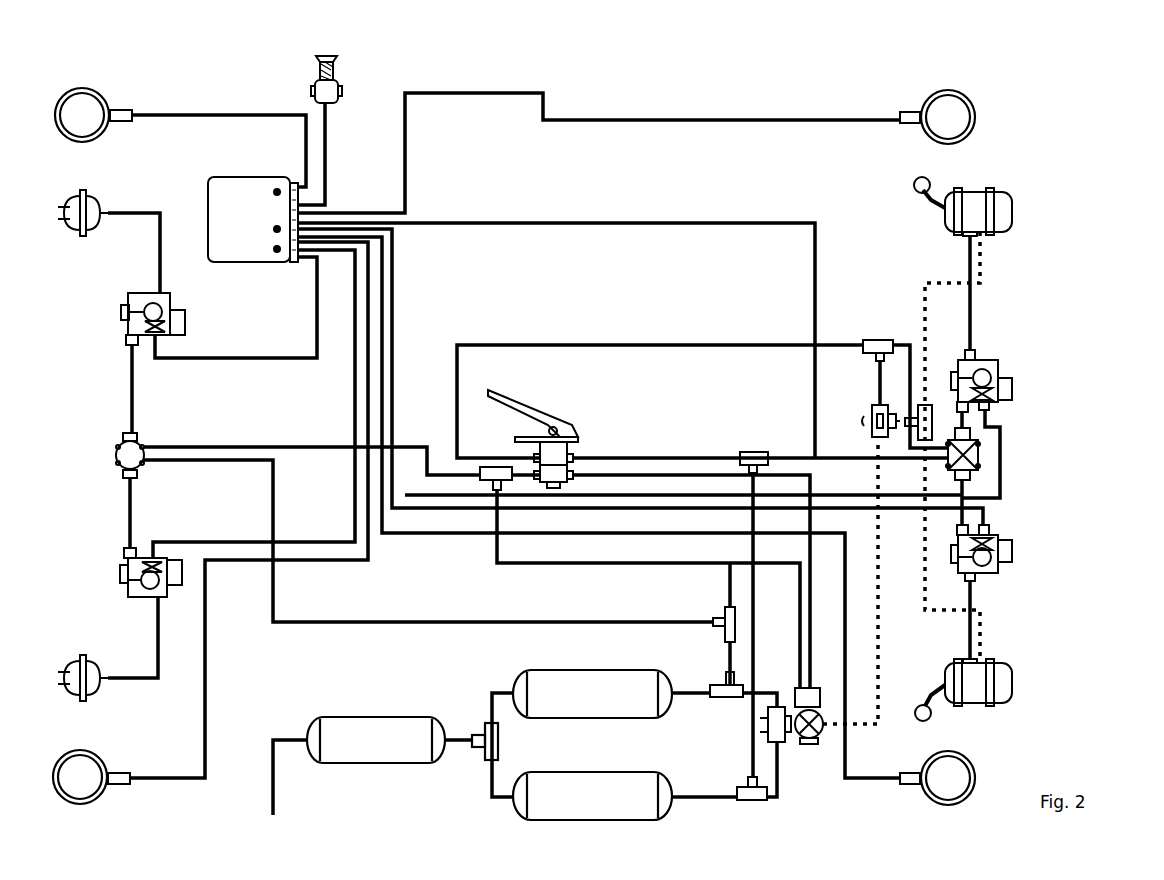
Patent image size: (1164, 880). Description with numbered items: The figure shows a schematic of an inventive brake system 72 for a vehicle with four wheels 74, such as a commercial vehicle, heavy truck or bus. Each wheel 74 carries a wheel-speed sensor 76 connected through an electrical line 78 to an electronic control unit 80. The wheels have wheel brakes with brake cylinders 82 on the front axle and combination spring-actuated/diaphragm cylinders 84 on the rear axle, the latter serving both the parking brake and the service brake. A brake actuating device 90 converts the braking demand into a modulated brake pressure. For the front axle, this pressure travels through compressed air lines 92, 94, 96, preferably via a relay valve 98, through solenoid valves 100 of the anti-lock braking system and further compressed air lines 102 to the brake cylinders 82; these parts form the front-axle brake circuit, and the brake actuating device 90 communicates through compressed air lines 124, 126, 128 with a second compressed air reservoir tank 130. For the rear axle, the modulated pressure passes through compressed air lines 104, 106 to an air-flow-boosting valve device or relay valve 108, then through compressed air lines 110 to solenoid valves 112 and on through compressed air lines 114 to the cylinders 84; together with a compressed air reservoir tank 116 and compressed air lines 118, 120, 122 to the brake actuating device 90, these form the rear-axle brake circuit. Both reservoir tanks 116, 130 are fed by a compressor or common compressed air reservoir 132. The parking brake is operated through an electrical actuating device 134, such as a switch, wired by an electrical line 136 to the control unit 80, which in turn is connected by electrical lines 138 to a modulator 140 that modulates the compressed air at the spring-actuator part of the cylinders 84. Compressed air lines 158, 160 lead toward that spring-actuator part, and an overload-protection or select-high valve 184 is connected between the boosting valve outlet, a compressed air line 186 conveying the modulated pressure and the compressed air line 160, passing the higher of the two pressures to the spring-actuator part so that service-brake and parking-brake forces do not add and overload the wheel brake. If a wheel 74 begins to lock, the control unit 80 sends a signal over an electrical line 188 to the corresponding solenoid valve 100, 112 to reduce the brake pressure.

The brake system 72 is at (690, 70).
The wheel 74 is at (82, 90).
The wheel-speed sensor 76 is at (118, 110).
The electrical line 78 is at (254, 121).
The electronic control unit 80 is at (266, 264).
The brake cylinder 82 is at (96, 200).
The combination spring-actuated/diaphragm cylinder 84 is at (1012, 222).
The brake actuating device 90 is at (548, 416).
The compressed air line 92 is at (524, 482).
The compressed air line 94 is at (412, 444).
The compressed air line 96 is at (134, 378).
The relay valve 98 is at (142, 444).
The solenoid valve 100 is at (166, 299).
The compressed air line 102 is at (162, 262).
The compressed air line 104 is at (456, 448).
The compressed air line 106 is at (881, 375).
The air-flow-boosting valve device 108 is at (980, 455).
The compressed air line 110 is at (1000, 428).
The solenoid valve 112 is at (1012, 372).
The compressed air line 114 is at (972, 316).
The compressed air reservoir tank 116 is at (586, 818).
The compressed air line 118 is at (694, 800).
The compressed air line 120 is at (754, 656).
The compressed air line 122 is at (670, 456).
The compressed air line 124 is at (720, 583).
The compressed air line 126 is at (722, 656).
The compressed air line 128 is at (682, 694).
The second compressed air reservoir tank 130 is at (592, 710).
The compressed air reservoir 132 is at (362, 764).
The electrical actuating device 134 is at (340, 84).
The electrical line 136 is at (327, 152).
The electrical line 138 is at (686, 223).
The modulator 140 is at (798, 748).
The compressed air line 158 is at (882, 648).
The compressed air line 160 is at (944, 276).
The overload-protection valve 184 is at (872, 406).
The compressed air line 186 is at (872, 369).
The electrical line 188 is at (396, 286).